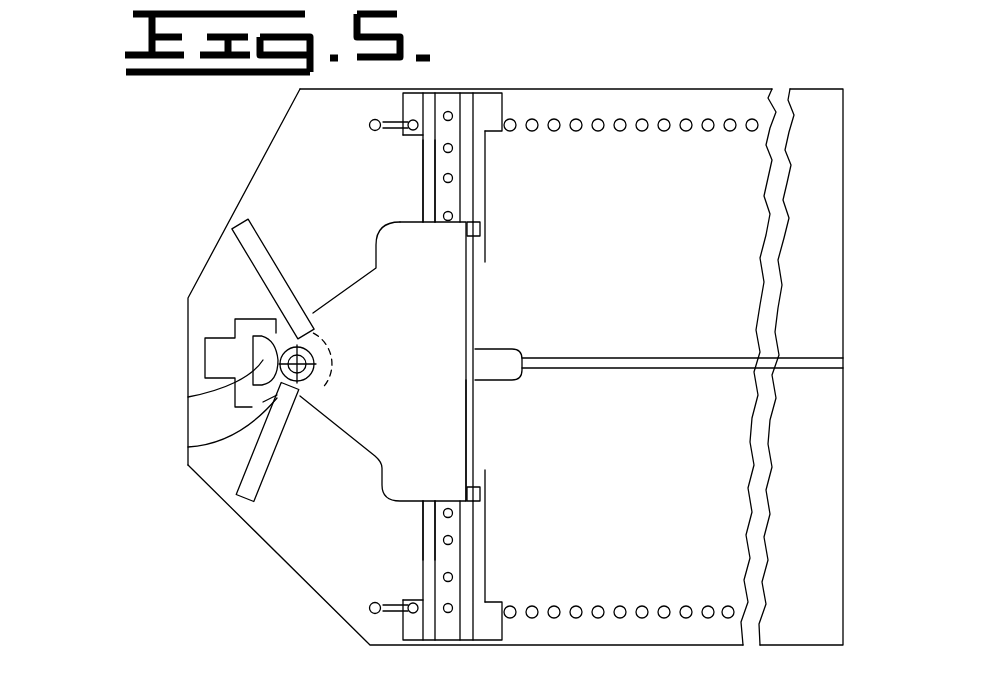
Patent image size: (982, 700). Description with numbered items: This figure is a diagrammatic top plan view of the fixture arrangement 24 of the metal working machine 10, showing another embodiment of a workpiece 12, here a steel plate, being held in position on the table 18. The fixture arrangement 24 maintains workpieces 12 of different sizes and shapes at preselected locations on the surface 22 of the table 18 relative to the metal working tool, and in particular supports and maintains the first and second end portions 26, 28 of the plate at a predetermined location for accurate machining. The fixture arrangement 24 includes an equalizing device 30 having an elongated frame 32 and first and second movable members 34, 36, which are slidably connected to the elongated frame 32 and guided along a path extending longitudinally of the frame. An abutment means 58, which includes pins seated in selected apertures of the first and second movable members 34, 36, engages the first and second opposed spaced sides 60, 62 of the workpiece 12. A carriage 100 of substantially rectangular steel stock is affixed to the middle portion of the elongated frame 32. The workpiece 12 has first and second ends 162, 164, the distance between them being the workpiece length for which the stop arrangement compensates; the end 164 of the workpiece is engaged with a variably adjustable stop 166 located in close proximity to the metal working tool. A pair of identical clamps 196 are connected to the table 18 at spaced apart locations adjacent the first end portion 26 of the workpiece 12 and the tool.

The metal working machine 10 is at (407, 367).
The workpiece 12 is at (439, 355).
The table 18 is at (247, 187).
The surface of the table 22 is at (285, 512).
The fixture arrangement 24 is at (245, 145).
The first end portion of the plate 26 is at (211, 380).
The second end portion of the plate 28 is at (445, 300).
The equalizing device 30 is at (506, 557).
The elongated frame 32 is at (477, 436).
The first movable member 34 is at (455, 553).
The second movable member 36 is at (441, 353).
The abutment means 58 is at (456, 213).
The first side of the workpiece 60 is at (407, 503).
The second side of the workpiece 62 is at (410, 224).
The carriage 100 is at (518, 378).
The first end of the workpiece 162 is at (475, 327).
The first end of the workpiece 164 is at (268, 383).
The variably adjustable stop 166 is at (205, 338).
The clamps 196 is at (247, 261).